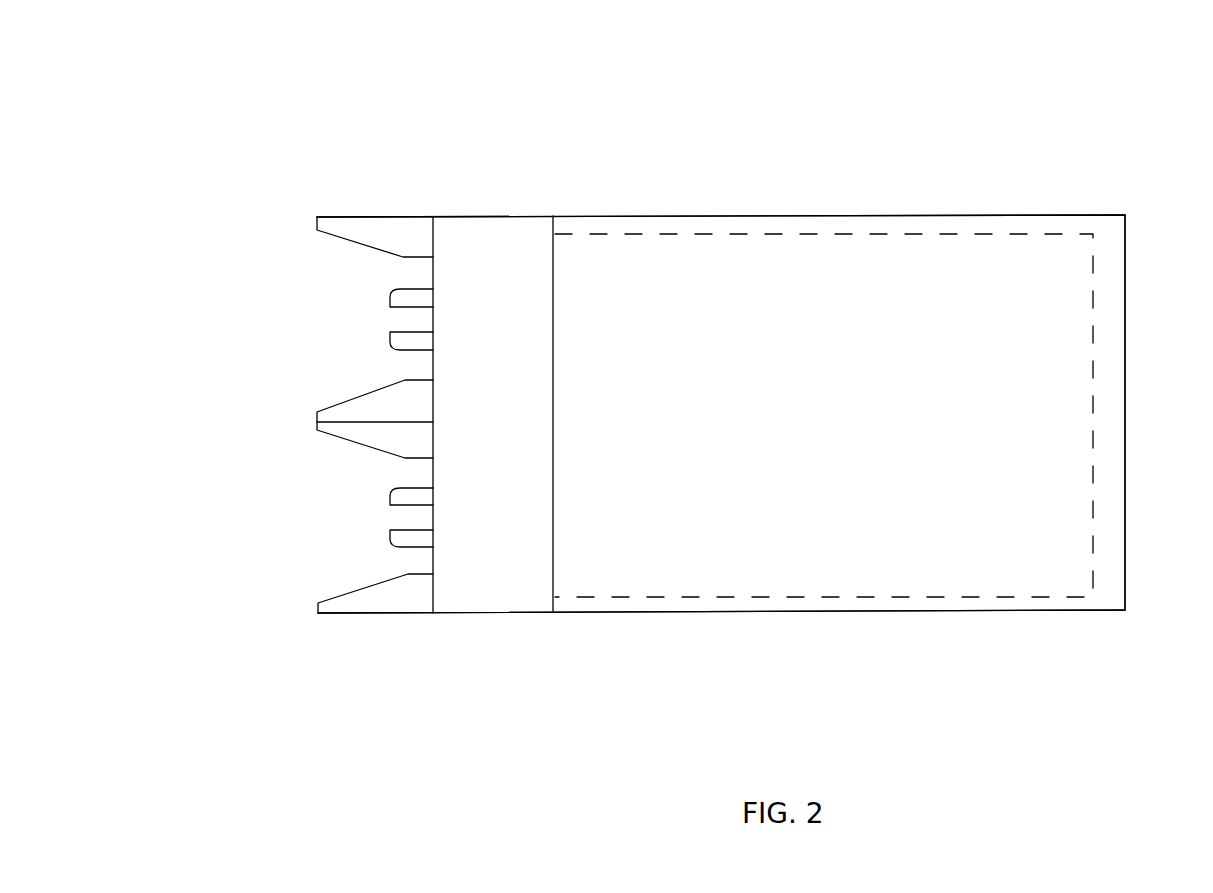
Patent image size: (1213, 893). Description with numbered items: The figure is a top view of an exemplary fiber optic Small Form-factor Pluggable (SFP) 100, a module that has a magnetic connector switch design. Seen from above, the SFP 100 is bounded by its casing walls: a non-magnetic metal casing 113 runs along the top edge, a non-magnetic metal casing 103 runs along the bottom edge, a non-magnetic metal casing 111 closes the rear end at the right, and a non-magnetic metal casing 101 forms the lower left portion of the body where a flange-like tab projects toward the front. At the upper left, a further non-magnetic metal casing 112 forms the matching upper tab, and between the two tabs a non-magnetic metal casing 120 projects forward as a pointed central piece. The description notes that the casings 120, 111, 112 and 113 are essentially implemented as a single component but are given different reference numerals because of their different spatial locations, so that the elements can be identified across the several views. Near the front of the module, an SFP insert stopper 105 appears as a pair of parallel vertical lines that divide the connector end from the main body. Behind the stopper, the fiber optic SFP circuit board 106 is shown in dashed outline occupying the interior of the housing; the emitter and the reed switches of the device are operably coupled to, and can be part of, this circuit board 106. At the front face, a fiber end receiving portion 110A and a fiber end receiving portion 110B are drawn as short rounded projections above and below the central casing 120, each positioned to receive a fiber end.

The fiber optic Small Form-factor Pluggable (SFP) 100 is at (1069, 89).
The non-magnetic metal casing 101 is at (390, 615).
The non-magnetic metal casing 103 is at (1020, 612).
The SFP insert stopper 105 is at (508, 216).
The fiber optic SFP circuit board 106 is at (832, 598).
The fiber end receiving portion 110A is at (387, 295).
The fiber end receiving portion 110B is at (386, 538).
The non-magnetic metal casing 111 is at (1126, 392).
The non-magnetic metal casing 112 is at (347, 216).
The non-magnetic metal casing 113 is at (843, 215).
The non-magnetic metal casing 120 is at (316, 415).